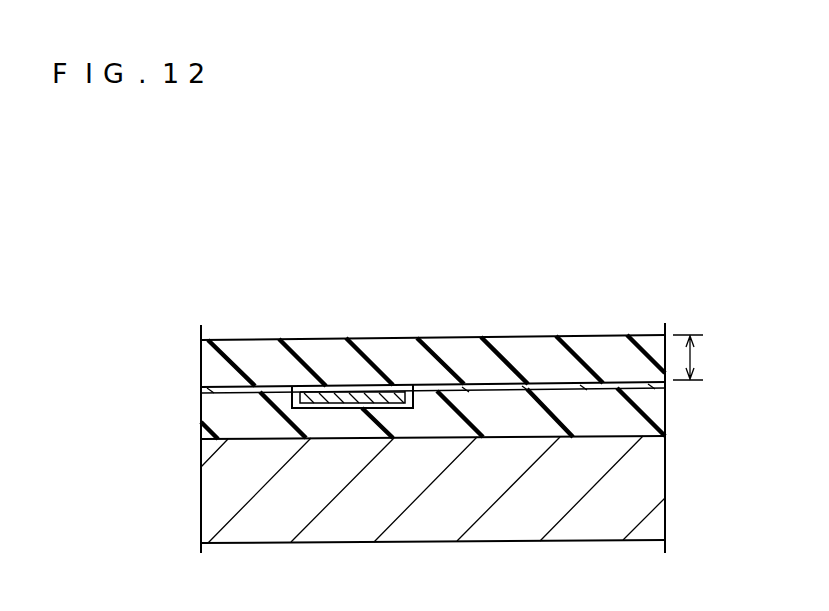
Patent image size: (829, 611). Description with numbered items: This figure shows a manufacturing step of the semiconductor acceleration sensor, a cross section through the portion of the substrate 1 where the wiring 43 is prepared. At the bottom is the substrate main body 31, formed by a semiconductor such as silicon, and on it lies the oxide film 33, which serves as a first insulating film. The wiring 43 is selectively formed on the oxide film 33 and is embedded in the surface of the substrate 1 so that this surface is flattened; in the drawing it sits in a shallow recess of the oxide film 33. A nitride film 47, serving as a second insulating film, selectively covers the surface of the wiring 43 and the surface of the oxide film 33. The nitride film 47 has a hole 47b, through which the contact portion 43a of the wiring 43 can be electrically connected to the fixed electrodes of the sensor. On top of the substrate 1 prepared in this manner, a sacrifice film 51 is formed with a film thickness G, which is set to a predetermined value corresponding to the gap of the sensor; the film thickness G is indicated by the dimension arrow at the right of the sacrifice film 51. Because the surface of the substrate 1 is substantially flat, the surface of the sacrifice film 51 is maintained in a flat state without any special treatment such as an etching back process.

The substrate 1 is at (200, 483).
The substrate main body 31 is at (665, 485).
The oxide film 33 is at (393, 392).
The wiring 43 is at (344, 394).
The contact portion 43a is at (367, 394).
The nitride film 47 is at (669, 386).
The hole 47b is at (306, 388).
The sacrifice film 51 is at (200, 371).
The film thickness G is at (694, 357).